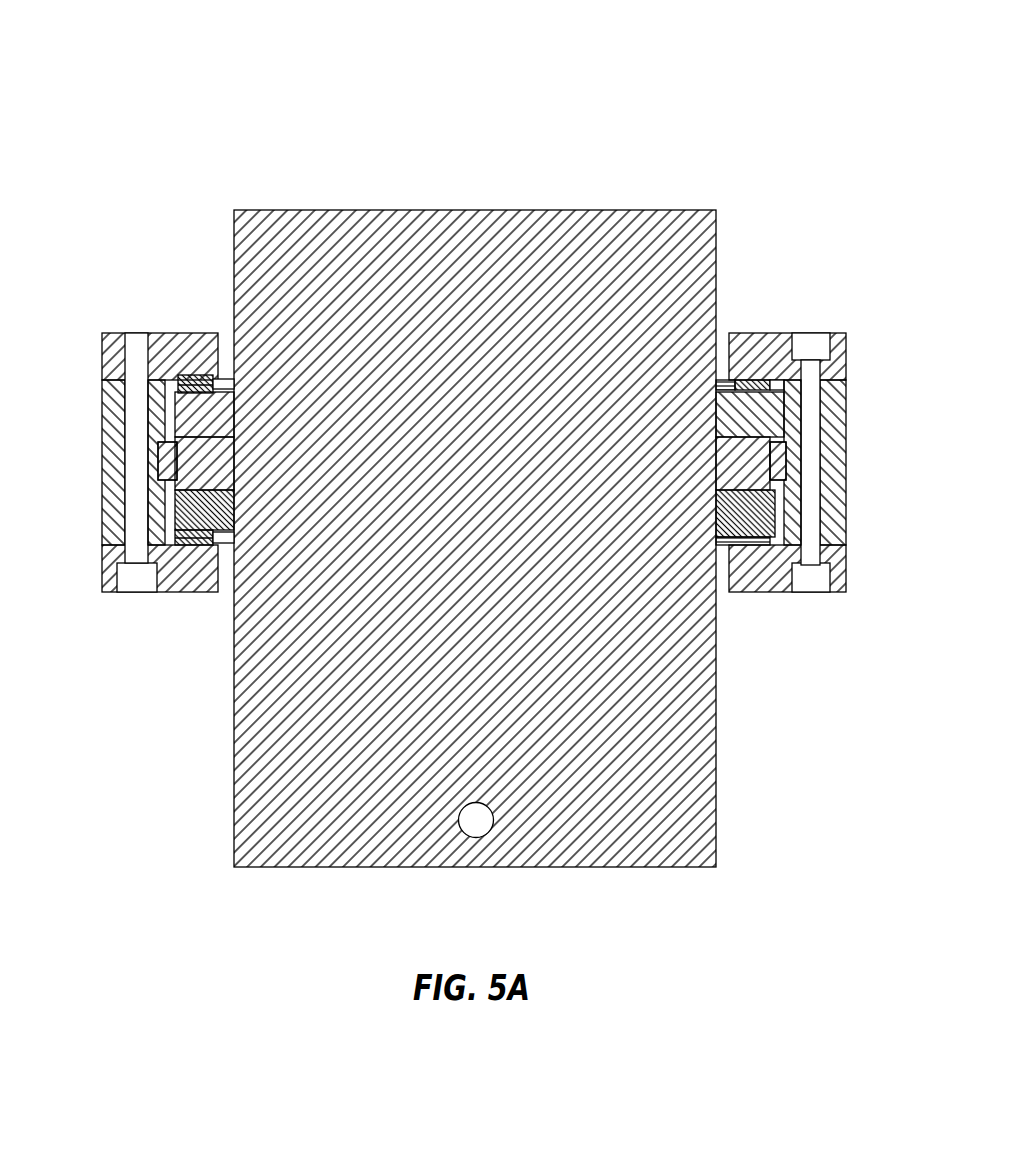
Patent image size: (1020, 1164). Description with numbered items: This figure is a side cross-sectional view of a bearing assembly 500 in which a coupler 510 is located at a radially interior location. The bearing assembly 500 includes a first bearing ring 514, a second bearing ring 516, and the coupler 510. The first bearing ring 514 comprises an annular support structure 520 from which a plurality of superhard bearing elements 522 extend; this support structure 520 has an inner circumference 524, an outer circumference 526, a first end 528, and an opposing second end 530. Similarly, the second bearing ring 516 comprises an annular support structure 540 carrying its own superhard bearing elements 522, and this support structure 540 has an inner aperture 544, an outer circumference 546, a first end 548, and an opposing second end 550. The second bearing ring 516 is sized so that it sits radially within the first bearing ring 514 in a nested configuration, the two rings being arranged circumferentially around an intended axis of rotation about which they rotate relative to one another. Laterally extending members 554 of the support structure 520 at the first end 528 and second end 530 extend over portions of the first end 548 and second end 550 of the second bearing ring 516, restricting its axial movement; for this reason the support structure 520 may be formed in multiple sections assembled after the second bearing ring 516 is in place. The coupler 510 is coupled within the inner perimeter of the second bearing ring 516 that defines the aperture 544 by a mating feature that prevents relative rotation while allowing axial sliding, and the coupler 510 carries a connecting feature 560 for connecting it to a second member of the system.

The bearing assembly 500 is at (748, 86).
The coupler 510 is at (525, 240).
The first bearing ring 514 is at (852, 342).
The second bearing ring 516 is at (802, 524).
The annular support structure 520 is at (838, 415).
The superhard bearing elements 522 is at (775, 333).
The inner circumference 524 is at (227, 333).
The outer circumference 526 is at (107, 435).
The first end 528 is at (165, 333).
The second end 530 is at (187, 593).
The annular support structure 540 is at (150, 412).
The inner aperture 544 is at (236, 513).
The outer circumference 546 is at (148, 506).
The first end 548 is at (173, 333).
The second end 550 is at (148, 555).
The laterally extending members 554 is at (757, 333).
The connecting feature 560 is at (478, 820).